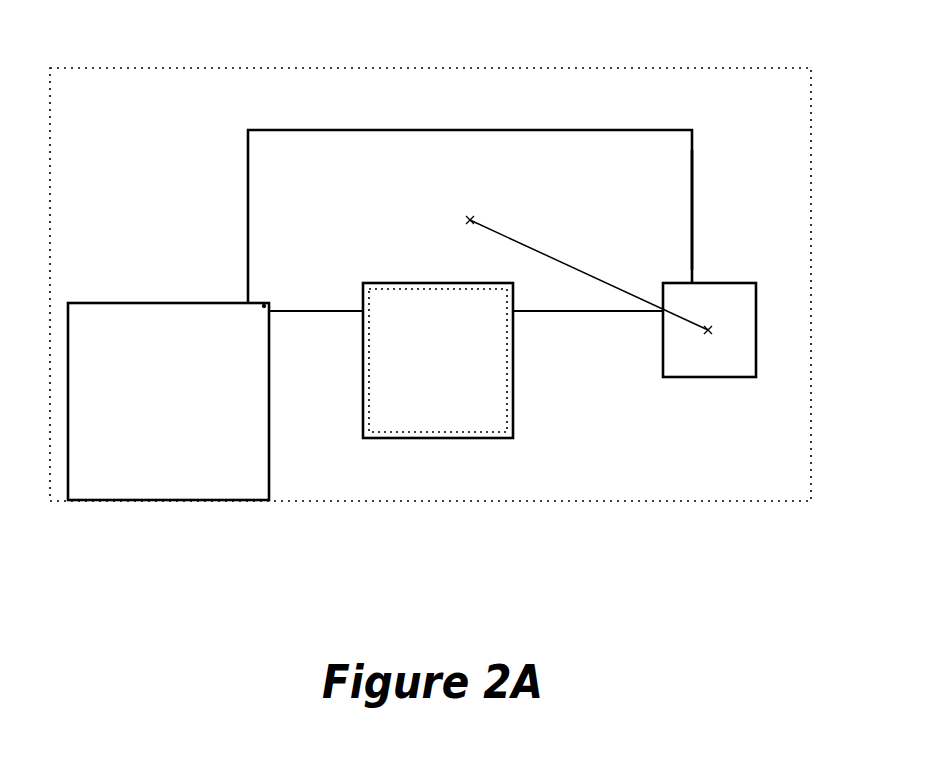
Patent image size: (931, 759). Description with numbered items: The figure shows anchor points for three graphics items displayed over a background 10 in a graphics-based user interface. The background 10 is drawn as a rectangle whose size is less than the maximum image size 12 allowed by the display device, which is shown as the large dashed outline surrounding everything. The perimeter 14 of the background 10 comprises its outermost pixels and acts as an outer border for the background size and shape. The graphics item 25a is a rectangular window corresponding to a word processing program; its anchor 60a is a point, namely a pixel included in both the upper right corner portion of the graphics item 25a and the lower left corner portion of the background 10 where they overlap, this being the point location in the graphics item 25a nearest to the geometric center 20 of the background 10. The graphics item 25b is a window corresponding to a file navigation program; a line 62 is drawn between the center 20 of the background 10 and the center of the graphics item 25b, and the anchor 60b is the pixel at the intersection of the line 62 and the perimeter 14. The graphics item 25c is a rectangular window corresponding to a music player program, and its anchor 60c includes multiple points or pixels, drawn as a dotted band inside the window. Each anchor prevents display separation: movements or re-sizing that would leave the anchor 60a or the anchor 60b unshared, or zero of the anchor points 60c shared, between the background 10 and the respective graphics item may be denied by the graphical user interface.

The maximum image size 12 is at (728, 68).
The background 10 is at (692, 130).
The perimeter 14 is at (692, 183).
The geometric center 20 is at (468, 218).
The line 62 is at (592, 272).
The graphics item 25a is at (160, 303).
The anchor 60a is at (263, 305).
The graphics item 25c is at (363, 283).
The anchor 60c is at (466, 289).
The graphics item 25b is at (710, 377).
The anchor 60b is at (666, 310).